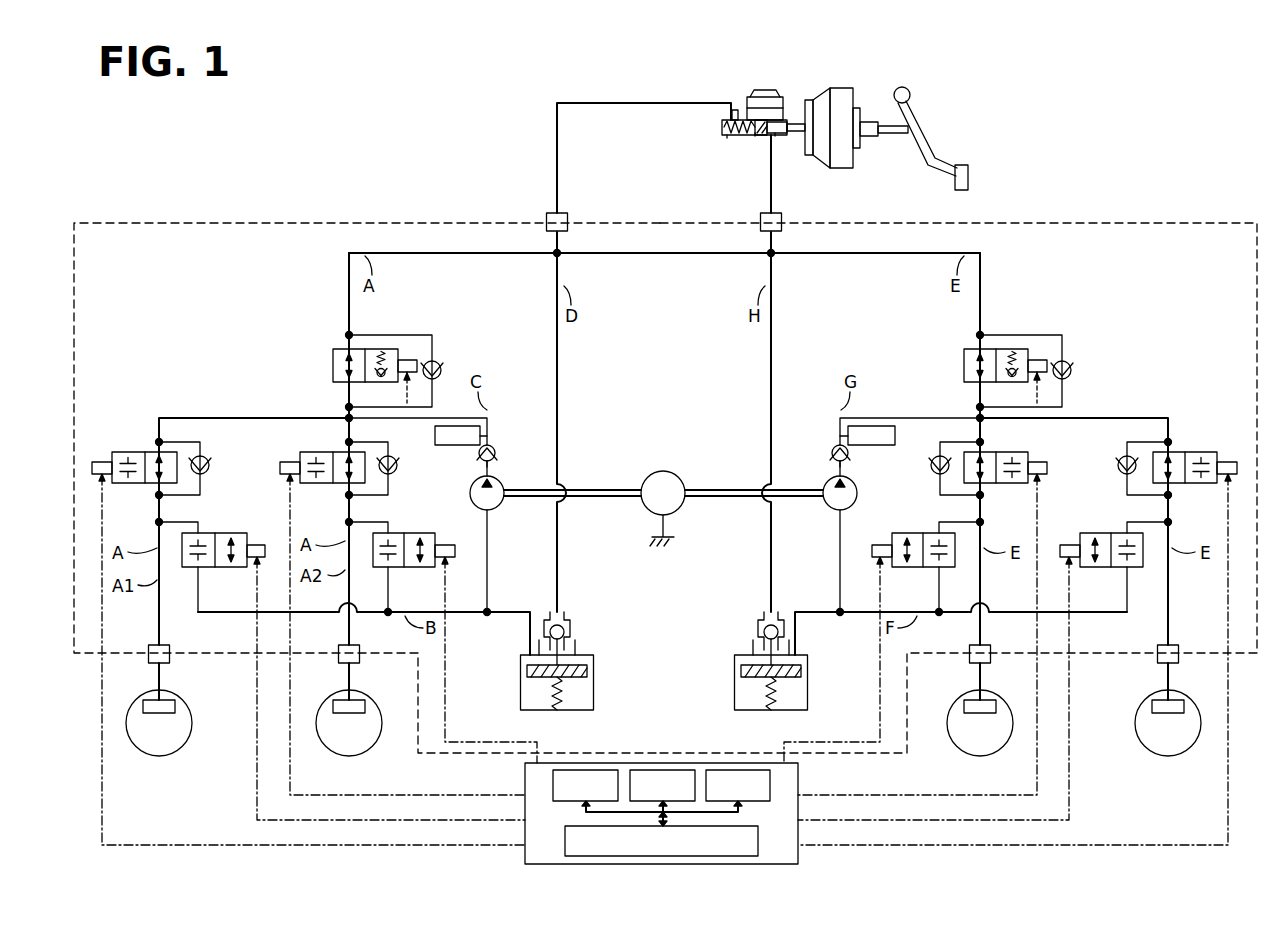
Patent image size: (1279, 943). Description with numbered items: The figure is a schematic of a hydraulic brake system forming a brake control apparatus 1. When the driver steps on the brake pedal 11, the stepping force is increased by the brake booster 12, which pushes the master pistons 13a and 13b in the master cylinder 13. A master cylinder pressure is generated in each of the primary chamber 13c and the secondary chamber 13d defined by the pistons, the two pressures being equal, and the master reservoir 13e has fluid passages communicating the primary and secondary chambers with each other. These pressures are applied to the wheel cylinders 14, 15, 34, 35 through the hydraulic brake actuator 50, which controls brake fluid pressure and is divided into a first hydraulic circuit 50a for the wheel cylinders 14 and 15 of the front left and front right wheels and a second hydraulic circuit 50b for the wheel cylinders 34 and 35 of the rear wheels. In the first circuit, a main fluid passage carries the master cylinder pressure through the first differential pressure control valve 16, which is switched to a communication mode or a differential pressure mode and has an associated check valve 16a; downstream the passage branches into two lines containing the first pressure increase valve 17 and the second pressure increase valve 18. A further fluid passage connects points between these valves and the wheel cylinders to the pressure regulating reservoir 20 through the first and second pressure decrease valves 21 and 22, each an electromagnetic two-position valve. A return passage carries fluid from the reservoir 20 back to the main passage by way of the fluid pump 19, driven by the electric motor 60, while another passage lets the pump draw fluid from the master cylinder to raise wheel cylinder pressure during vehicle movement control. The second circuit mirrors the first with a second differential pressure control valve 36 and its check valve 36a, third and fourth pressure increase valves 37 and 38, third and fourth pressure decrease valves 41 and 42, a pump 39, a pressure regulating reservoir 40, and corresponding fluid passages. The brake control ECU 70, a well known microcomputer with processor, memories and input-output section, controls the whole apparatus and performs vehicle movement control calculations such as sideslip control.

The brake control apparatus 1 is at (1032, 122).
The brake pedal 11 is at (920, 122).
The brake booster 12 is at (845, 88).
The master cylinder 13 is at (720, 128).
The master piston 13a is at (756, 136).
The master piston 13b is at (790, 135).
The primary chamber 13c is at (727, 136).
The secondary chamber 13d is at (775, 136).
The master reservoir 13e is at (762, 92).
The wheel cylinder 14 is at (142, 706).
The wheel cylinder 15 is at (333, 706).
The first differential pressure control valve 16 is at (333, 366).
The check valve 16a is at (440, 362).
The first pressure increase valve 17 is at (153, 450).
The second pressure increase valve 18 is at (332, 450).
The fluid pump 19 is at (470, 493).
The pressure regulating reservoir 20 is at (519, 699).
The first pressure decrease valve 21 is at (205, 533).
The second pressure decrease valve 22 is at (395, 533).
The wheel cylinder 34 is at (1185, 706).
The wheel cylinder 35 is at (1012, 700).
The second differential pressure control valve 36 is at (964, 367).
The check valve 36a is at (1071, 366).
The third pressure increase valve 37 is at (1178, 451).
The fourth pressure increase valve 38 is at (996, 450).
The pump 39 is at (858, 493).
The pressure regulating reservoir 40 is at (806, 699).
The third pressure decrease valve 41 is at (1118, 533).
The fourth pressure decrease valve 42 is at (930, 533).
The hydraulic brake actuator 50 is at (1241, 223).
The first hydraulic circuit 50a is at (140, 272).
The second hydraulic circuit 50b is at (1183, 280).
The electric motor 60 is at (663, 470).
The brake control ECU 70 is at (798, 773).